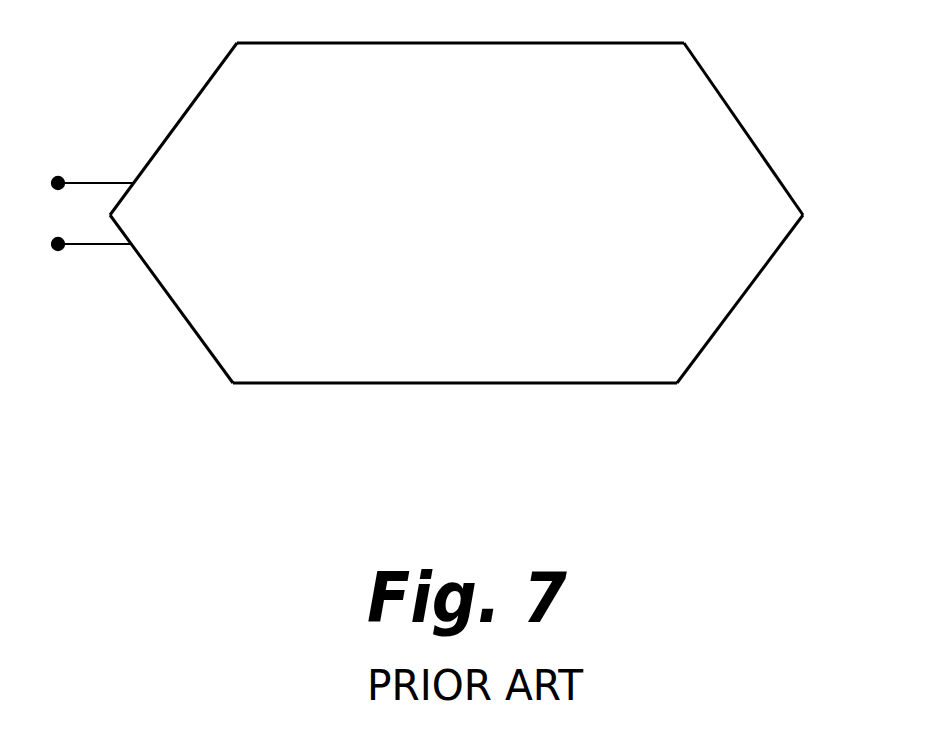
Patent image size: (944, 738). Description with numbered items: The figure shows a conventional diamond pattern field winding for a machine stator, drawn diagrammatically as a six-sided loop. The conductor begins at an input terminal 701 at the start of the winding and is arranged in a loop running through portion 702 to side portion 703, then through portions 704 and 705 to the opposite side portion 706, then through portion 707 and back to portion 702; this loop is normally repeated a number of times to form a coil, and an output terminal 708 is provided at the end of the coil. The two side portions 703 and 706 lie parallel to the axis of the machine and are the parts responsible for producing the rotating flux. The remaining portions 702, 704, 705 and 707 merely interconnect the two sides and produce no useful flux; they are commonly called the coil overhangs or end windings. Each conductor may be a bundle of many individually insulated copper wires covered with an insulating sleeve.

The input terminal 701 is at (83, 181).
The conductor loop portion 702 is at (157, 143).
The side portion 703 is at (457, 45).
The conductor loop portion 704 is at (772, 163).
The conductor loop portion 705 is at (743, 300).
The side portion 706 is at (438, 382).
The conductor loop portion 707 is at (195, 332).
The output terminal 708 is at (98, 248).